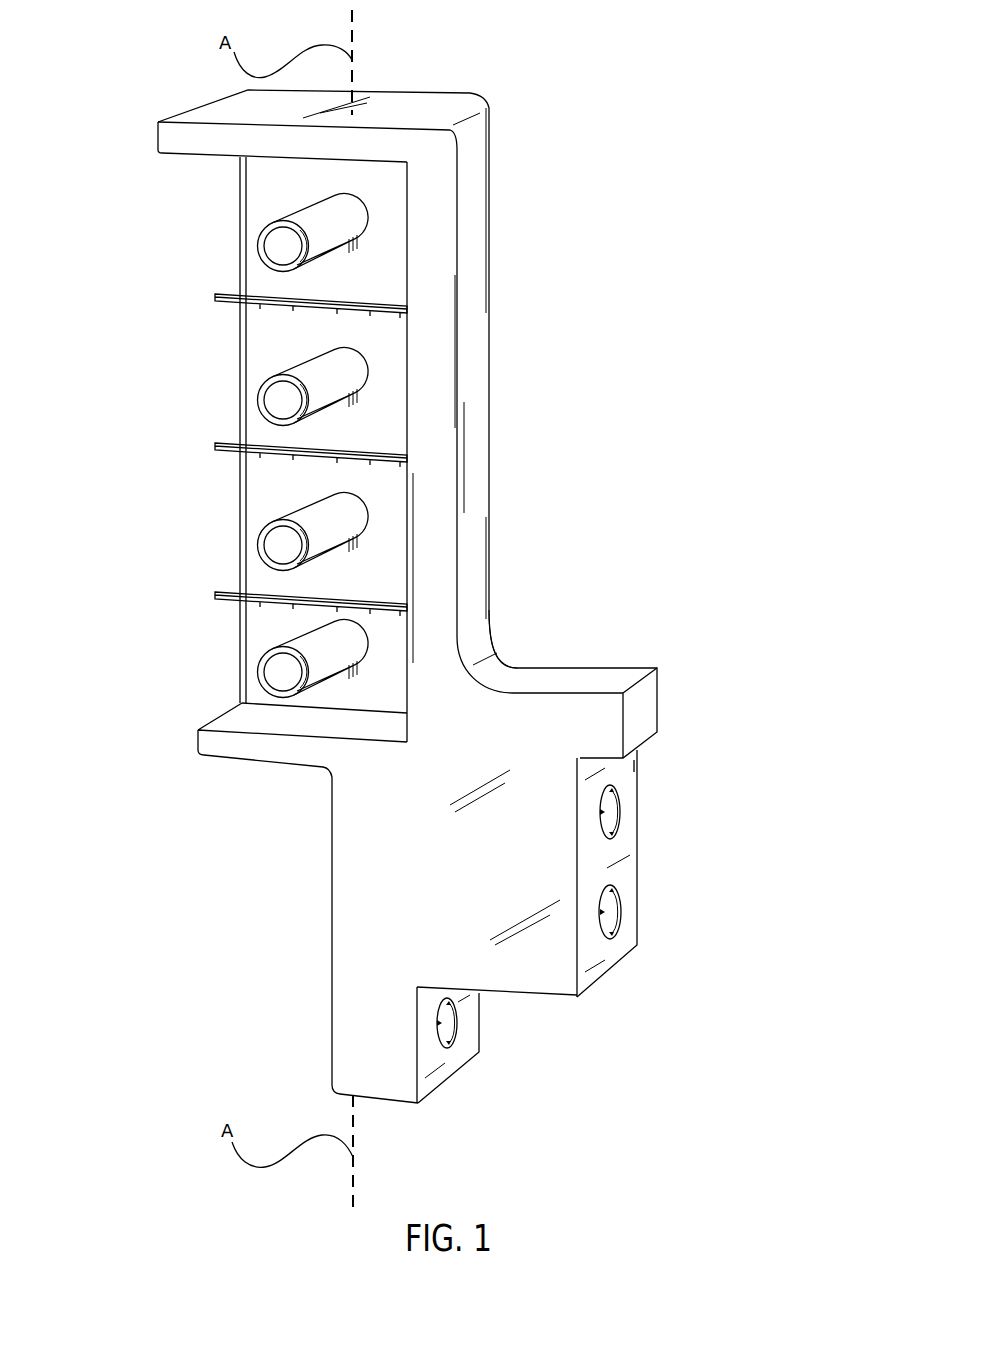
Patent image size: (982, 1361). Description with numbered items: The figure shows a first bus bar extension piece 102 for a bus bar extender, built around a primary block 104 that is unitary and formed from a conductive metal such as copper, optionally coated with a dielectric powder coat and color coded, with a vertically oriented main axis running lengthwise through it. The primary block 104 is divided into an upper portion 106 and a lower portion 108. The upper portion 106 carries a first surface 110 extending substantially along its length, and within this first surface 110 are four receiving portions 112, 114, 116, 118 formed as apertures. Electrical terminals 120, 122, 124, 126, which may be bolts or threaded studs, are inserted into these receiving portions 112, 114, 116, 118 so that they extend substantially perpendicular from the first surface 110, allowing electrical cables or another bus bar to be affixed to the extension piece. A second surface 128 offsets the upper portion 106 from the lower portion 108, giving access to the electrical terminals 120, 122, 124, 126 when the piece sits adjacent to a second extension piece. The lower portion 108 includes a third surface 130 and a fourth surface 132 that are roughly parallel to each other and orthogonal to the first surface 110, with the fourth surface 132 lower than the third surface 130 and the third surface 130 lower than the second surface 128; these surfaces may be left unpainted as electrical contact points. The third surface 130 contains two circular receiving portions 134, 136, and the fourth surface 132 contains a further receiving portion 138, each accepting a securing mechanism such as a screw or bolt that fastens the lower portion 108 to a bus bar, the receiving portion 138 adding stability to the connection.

The first bus bar extension piece 102 is at (633, 113).
The primary block 104 is at (388, 902).
The upper portion 106 is at (118, 88).
The lower portion 108 is at (768, 753).
The first surface 110 is at (258, 365).
The receiving portion 112 is at (370, 217).
The receiving portion 114 is at (370, 372).
The receiving portion 116 is at (370, 515).
The receiving portion 118 is at (368, 640).
The electrical terminal 120 is at (265, 220).
The electrical terminal 122 is at (260, 412).
The electrical terminal 124 is at (260, 528).
The electrical terminal 126 is at (260, 662).
The second surface 128 is at (476, 604).
The third surface 130 is at (636, 866).
The fourth surface 132 is at (480, 1052).
The receiving portion 134 is at (622, 806).
The receiving portion 136 is at (622, 906).
The receiving portion 138 is at (478, 1013).